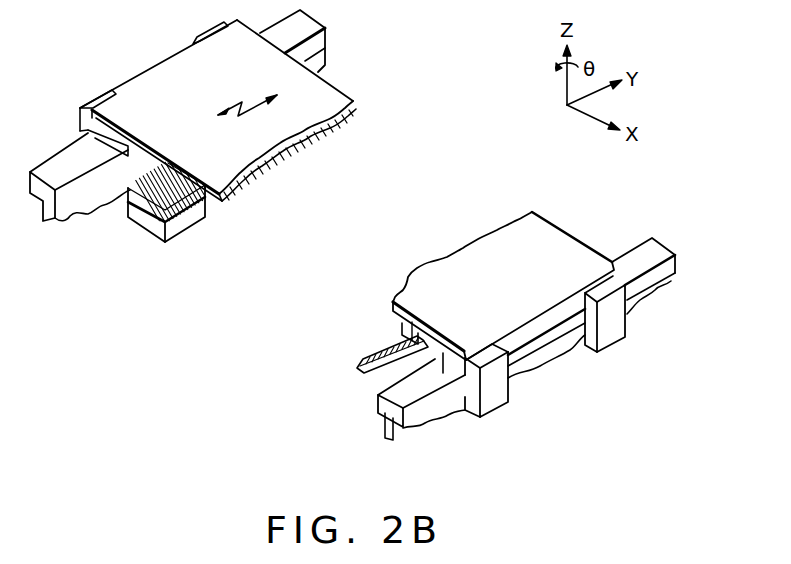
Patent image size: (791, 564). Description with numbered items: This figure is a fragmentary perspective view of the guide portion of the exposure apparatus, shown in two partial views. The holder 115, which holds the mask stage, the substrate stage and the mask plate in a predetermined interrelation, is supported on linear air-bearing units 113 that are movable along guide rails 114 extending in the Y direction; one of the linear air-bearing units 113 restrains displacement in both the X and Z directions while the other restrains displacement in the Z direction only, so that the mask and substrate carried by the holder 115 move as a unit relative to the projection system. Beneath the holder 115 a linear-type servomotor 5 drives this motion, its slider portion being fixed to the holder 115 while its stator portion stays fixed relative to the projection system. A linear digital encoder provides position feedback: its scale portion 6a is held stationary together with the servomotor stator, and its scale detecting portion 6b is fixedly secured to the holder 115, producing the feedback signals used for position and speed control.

The holder 115 is at (172, 72).
The linear air-bearing unit 113 is at (80, 100).
The guide rail 114 is at (52, 222).
The servomotor 5 is at (148, 229).
The scale portion 6a is at (358, 369).
The scale detecting portion 6b is at (402, 324).